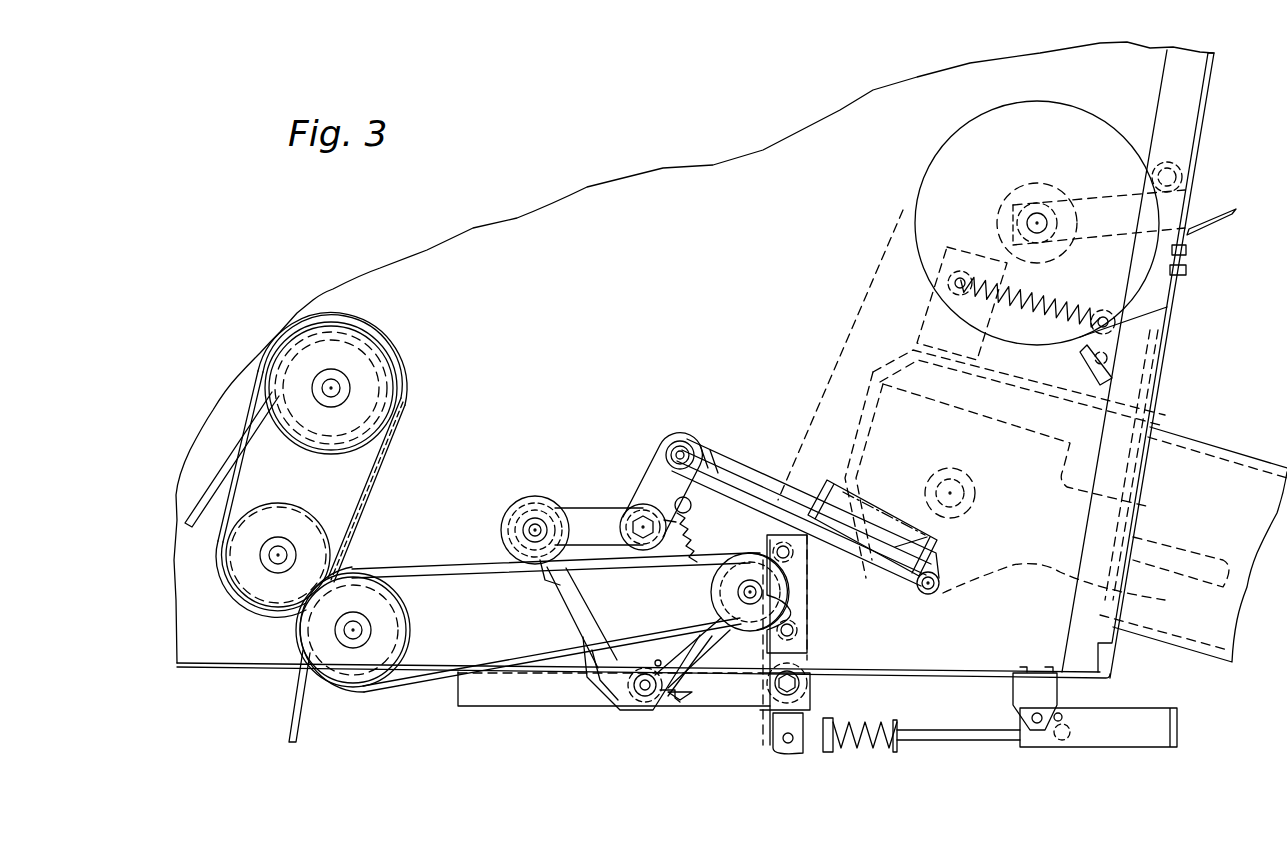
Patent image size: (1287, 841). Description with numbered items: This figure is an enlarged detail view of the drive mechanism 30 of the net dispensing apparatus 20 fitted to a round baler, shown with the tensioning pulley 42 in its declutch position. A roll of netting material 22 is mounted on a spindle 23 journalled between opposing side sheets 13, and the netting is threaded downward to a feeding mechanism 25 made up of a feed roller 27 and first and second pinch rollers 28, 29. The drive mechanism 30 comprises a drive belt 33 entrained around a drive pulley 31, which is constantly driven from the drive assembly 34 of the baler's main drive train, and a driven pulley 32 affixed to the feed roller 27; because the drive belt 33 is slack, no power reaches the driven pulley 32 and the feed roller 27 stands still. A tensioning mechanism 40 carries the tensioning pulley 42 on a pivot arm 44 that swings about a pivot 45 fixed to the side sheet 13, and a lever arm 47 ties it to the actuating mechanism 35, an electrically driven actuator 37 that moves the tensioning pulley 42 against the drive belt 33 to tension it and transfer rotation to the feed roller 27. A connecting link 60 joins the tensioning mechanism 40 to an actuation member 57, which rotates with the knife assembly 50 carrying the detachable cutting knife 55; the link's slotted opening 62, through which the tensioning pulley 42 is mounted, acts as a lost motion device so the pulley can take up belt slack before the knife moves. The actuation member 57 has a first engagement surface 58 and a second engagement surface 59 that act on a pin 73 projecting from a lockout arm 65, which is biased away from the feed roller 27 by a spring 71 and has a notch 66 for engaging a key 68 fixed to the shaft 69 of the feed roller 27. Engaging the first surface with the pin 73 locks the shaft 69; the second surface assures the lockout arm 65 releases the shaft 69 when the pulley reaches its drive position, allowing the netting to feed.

The side sheet 13 is at (625, 203).
The net dispensing apparatus 20 is at (770, 130).
The netting material 22 is at (957, 140).
The spindle 23 is at (1005, 220).
The feeding mechanism 25 is at (872, 622).
The feed roller 27 is at (792, 605).
The first pinch roller 28 is at (802, 570).
The second pinch roller 29 is at (802, 640).
The drive mechanism 30 is at (420, 712).
The drive pulley 31 is at (362, 585).
The driven pulley 32 is at (757, 540).
The drive belt 33 is at (476, 567).
The drive assembly 34 is at (300, 705).
The actuating mechanism 35 is at (742, 440).
The actuator 37 is at (937, 540).
The tensioning mechanism 40 is at (530, 432).
The tensioning pulley 42 is at (514, 518).
The pivot arm 44 is at (578, 523).
The pivot 45 is at (637, 508).
The lever arm 47 is at (660, 462).
The knife assembly 50 is at (640, 700).
The cutting knife 55 is at (680, 700).
The actuation member 57 is at (605, 700).
The first engagement surface 58 is at (582, 690).
The second engagement surface 59 is at (672, 690).
The connecting link 60 is at (574, 600).
The slotted opening 62 is at (550, 588).
The lockout arm 65 is at (705, 600).
The notch 66 is at (750, 556).
The key 68 is at (697, 612).
The shaft 69 is at (797, 645).
The spring 71 is at (695, 540).
The pin 73 is at (680, 665).